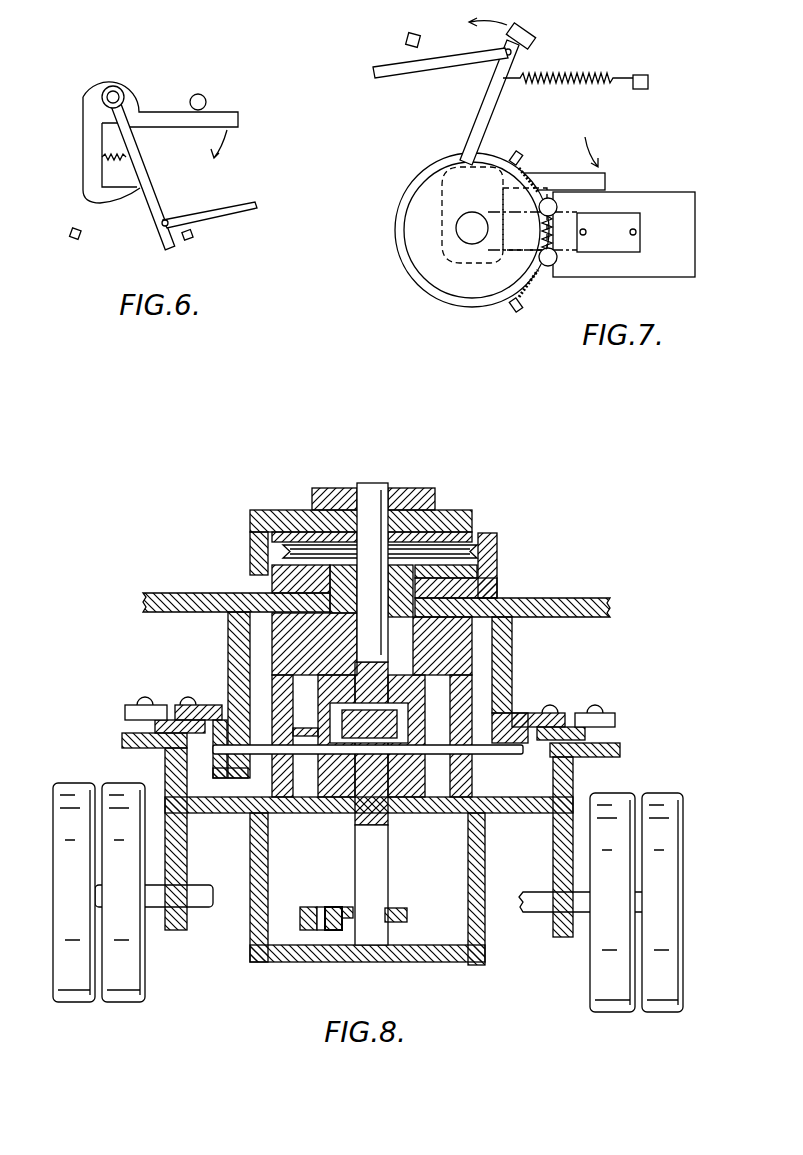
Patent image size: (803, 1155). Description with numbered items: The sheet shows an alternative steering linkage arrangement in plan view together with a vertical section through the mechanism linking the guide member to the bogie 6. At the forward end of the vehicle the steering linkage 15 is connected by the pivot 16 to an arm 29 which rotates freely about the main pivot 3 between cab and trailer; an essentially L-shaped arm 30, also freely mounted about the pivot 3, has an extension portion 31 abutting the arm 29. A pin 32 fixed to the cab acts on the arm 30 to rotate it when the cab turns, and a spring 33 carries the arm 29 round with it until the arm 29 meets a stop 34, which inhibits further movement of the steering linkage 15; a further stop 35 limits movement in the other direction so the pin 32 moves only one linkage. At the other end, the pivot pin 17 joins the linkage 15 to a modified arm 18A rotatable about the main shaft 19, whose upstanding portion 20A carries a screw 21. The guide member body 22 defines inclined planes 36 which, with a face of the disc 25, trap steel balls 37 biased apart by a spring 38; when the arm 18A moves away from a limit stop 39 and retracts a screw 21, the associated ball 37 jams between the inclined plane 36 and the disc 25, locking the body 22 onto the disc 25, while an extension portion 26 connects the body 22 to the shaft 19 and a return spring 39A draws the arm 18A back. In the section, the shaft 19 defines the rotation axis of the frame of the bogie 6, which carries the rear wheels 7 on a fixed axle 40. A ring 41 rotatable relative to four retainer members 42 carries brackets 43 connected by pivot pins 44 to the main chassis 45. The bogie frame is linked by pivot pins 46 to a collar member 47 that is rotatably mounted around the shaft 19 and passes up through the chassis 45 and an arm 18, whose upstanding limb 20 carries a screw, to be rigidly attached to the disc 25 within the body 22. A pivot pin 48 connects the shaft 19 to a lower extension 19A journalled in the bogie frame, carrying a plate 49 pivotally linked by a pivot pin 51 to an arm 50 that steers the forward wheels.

In FIG. 6, the pivot member 3 is at (108, 93).
In FIG. 8, the bogie 6 is at (553, 862).
In FIG. 8, the rear wheels 7 is at (668, 960).
In FIG. 6, the steering linkage 15 is at (238, 210).
In FIG. 7, the steering linkage 15 is at (433, 68).
In FIG. 6, the pivot 16 is at (163, 227).
In FIG. 7, the pivot pin 17 is at (505, 42).
In FIG. 8, the arm 18 is at (273, 587).
In FIG. 7, the modified arm 18A is at (493, 107).
In FIG. 7, the main shaft 19 is at (470, 240).
In FIG. 8, the main shaft 19 is at (377, 492).
In FIG. 8, the lower shaft extension 19A is at (375, 888).
In FIG. 8, the upstanding limb 20 is at (498, 553).
In FIG. 7, the upstanding portion 20A is at (561, 150).
In FIG. 7, the screw 21 is at (523, 300).
In FIG. 7, the guide member body 22 is at (645, 197).
In FIG. 8, the guide member body 22 is at (443, 530).
In FIG. 7, the disc 25 is at (428, 167).
In FIG. 8, the disc 25 is at (280, 548).
In FIG. 7, the extension portion 26 is at (633, 223).
In FIG. 8, the extension portion 26 is at (338, 492).
In FIG. 6, the arm 29 is at (151, 187).
In FIG. 6, the L-shaped arm 30 is at (165, 112).
In FIG. 6, the extension portion 31 is at (130, 197).
In FIG. 6, the pin 32 is at (207, 98).
In FIG. 6, the spring 33 is at (112, 153).
In FIG. 6, the stop 34 is at (75, 238).
In FIG. 6, the further stop 35 is at (190, 239).
In FIG. 7, the inclined planes 36 is at (558, 199).
In FIG. 7, the steel balls 37 is at (556, 266).
In FIG. 7, the spring 38 is at (540, 230).
In FIG. 7, the limit stop 39 is at (533, 35).
In FIG. 7, the return spring 39A is at (607, 75).
In FIG. 8, the fixed axle 40 is at (195, 900).
In FIG. 8, the ring 41 is at (173, 722).
In FIG. 8, the retainer members 42 is at (615, 720).
In FIG. 8, the brackets 43 is at (528, 712).
In FIG. 8, the pivot pins 44 is at (528, 750).
In FIG. 8, the main chassis 45 is at (580, 602).
In FIG. 8, the pivot pins 46 is at (300, 750).
In FIG. 8, the collar member 47 is at (282, 628).
In FIG. 8, the pivot pin 48 is at (383, 747).
In FIG. 8, the plate 49 is at (338, 910).
In FIG. 8, the arm 50 is at (337, 930).
In FIG. 8, the pivot pin 51 is at (317, 910).